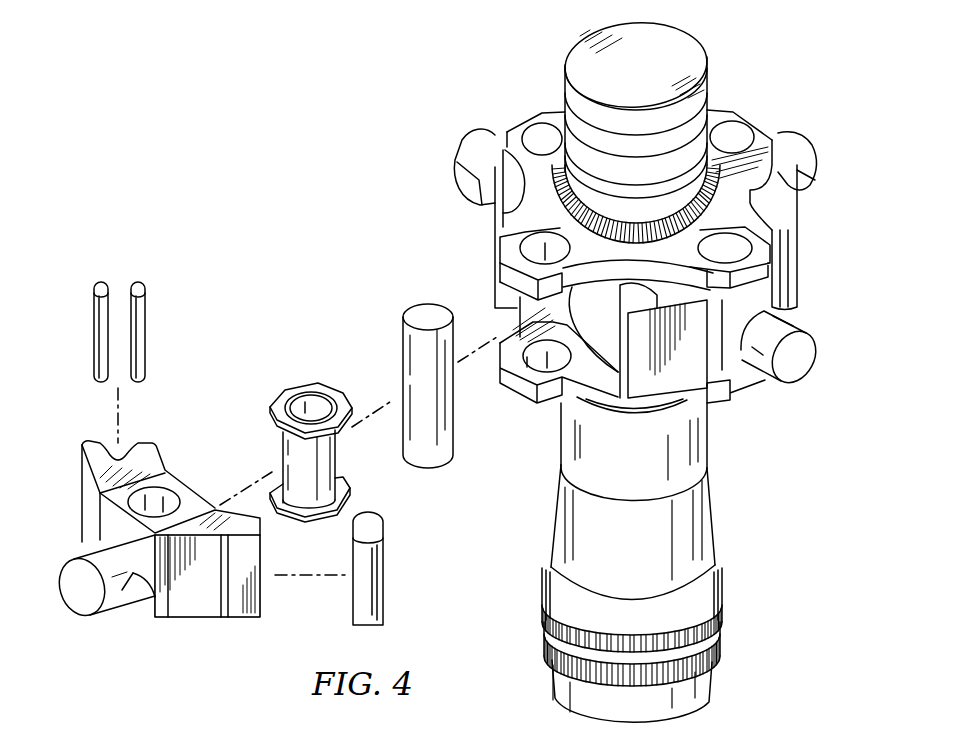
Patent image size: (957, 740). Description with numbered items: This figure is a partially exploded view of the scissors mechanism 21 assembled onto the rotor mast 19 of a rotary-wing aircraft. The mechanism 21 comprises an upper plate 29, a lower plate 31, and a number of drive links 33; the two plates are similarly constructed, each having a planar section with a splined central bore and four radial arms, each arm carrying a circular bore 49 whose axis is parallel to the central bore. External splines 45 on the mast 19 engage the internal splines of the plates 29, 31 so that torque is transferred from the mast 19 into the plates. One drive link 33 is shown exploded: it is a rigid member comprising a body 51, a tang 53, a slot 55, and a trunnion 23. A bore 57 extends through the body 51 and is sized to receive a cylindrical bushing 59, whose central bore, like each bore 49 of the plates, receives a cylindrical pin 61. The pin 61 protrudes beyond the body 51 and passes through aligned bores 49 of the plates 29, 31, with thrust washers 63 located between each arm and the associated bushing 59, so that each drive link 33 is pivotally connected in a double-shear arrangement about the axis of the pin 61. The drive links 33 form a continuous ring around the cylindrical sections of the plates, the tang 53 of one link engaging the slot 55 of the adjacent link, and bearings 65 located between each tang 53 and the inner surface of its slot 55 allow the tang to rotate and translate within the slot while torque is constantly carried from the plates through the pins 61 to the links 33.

The rotor mast 19 is at (716, 528).
The scissors mechanism 21 is at (800, 263).
The trunnion 23 is at (78, 591).
The upper plate 29 is at (635, 215).
The lower plate 31 is at (745, 400).
The drive link 33 is at (200, 622).
The splines 45 is at (718, 165).
The circular bore 49 is at (500, 234).
The body 51 is at (145, 603).
The tang 53 is at (248, 548).
The slot 55 is at (105, 450).
The bore 57 is at (160, 493).
The cylindrical bushing 59 is at (283, 445).
The cylindrical pin 61 is at (402, 356).
The thrust washer 63 is at (352, 493).
The bearing 65 is at (93, 332).